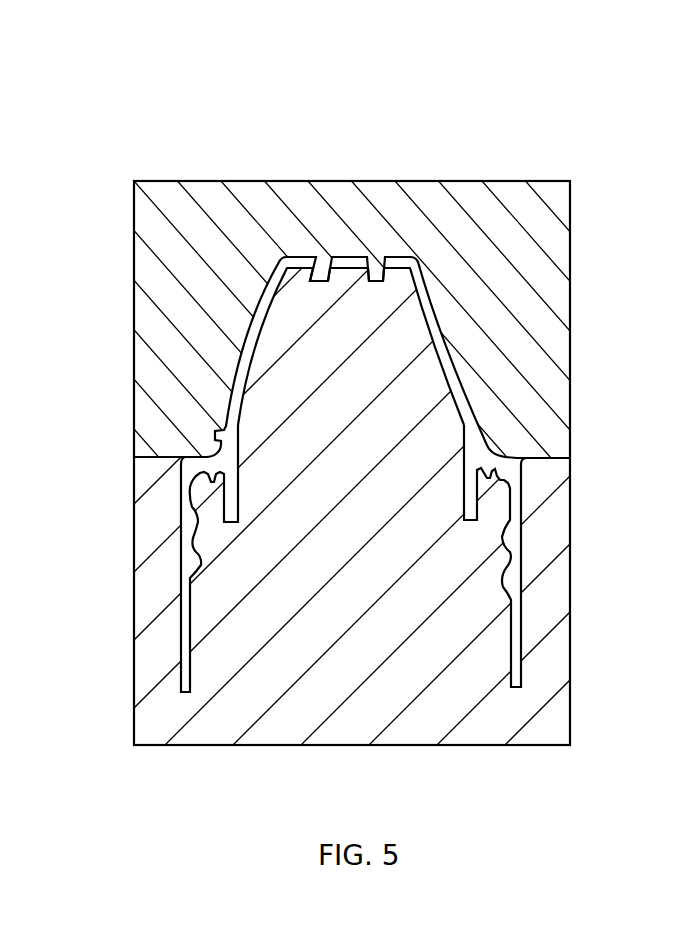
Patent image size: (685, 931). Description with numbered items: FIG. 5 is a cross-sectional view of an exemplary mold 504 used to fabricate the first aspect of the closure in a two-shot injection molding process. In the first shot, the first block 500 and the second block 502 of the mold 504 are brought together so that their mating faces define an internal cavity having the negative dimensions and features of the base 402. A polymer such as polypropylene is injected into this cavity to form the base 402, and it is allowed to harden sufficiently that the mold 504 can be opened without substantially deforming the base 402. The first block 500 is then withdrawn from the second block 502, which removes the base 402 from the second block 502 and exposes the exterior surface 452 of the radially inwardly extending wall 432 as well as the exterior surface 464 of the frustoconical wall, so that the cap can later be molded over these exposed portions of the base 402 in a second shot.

The mold 504 is at (342, 391).
The second block 502 is at (560, 252).
The first block 500 is at (560, 648).
The exterior surface of the frustoconical wall 464 is at (457, 360).
The exterior surface of the radially inwardly extending wall 452 is at (483, 438).
The radially inwardly extending wall 432 is at (498, 467).
The base 402 is at (181, 557).